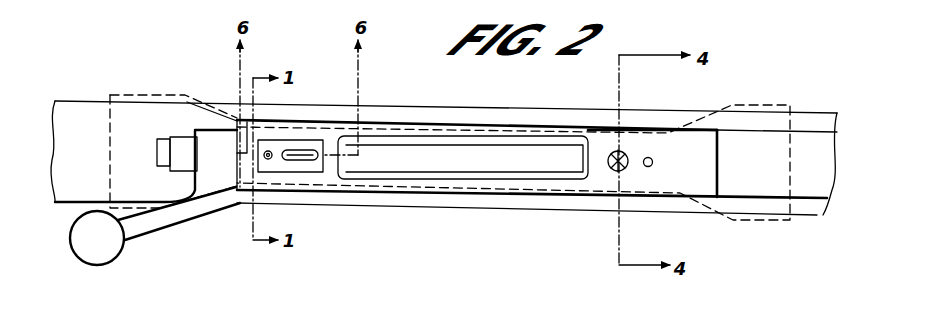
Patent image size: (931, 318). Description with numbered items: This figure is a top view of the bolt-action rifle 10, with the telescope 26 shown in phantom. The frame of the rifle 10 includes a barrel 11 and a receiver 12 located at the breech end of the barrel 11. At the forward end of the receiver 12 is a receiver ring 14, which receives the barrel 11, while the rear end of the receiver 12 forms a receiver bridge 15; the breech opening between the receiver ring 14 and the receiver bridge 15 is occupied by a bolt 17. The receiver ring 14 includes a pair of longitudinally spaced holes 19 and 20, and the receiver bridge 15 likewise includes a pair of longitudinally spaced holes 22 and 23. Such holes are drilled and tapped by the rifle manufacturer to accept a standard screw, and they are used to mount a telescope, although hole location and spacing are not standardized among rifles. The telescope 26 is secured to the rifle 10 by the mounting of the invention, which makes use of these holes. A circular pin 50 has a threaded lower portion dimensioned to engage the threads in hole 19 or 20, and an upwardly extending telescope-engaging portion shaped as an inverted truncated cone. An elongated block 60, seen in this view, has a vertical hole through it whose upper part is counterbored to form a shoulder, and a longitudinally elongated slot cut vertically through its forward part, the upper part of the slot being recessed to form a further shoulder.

The bolt-action rifle 10 is at (749, 76).
The barrel 11 is at (808, 143).
The receiver 12 is at (563, 188).
The receiver ring 14 is at (677, 184).
The receiver bridge 15 is at (241, 205).
The bolt 17 is at (420, 173).
The hole 19 is at (650, 157).
The hole 20 is at (614, 150).
The hole 22 is at (312, 175).
The hole 23 is at (269, 176).
The telescope 26 is at (775, 226).
The circular pin 50 is at (611, 172).
The elongated block 60 is at (309, 139).